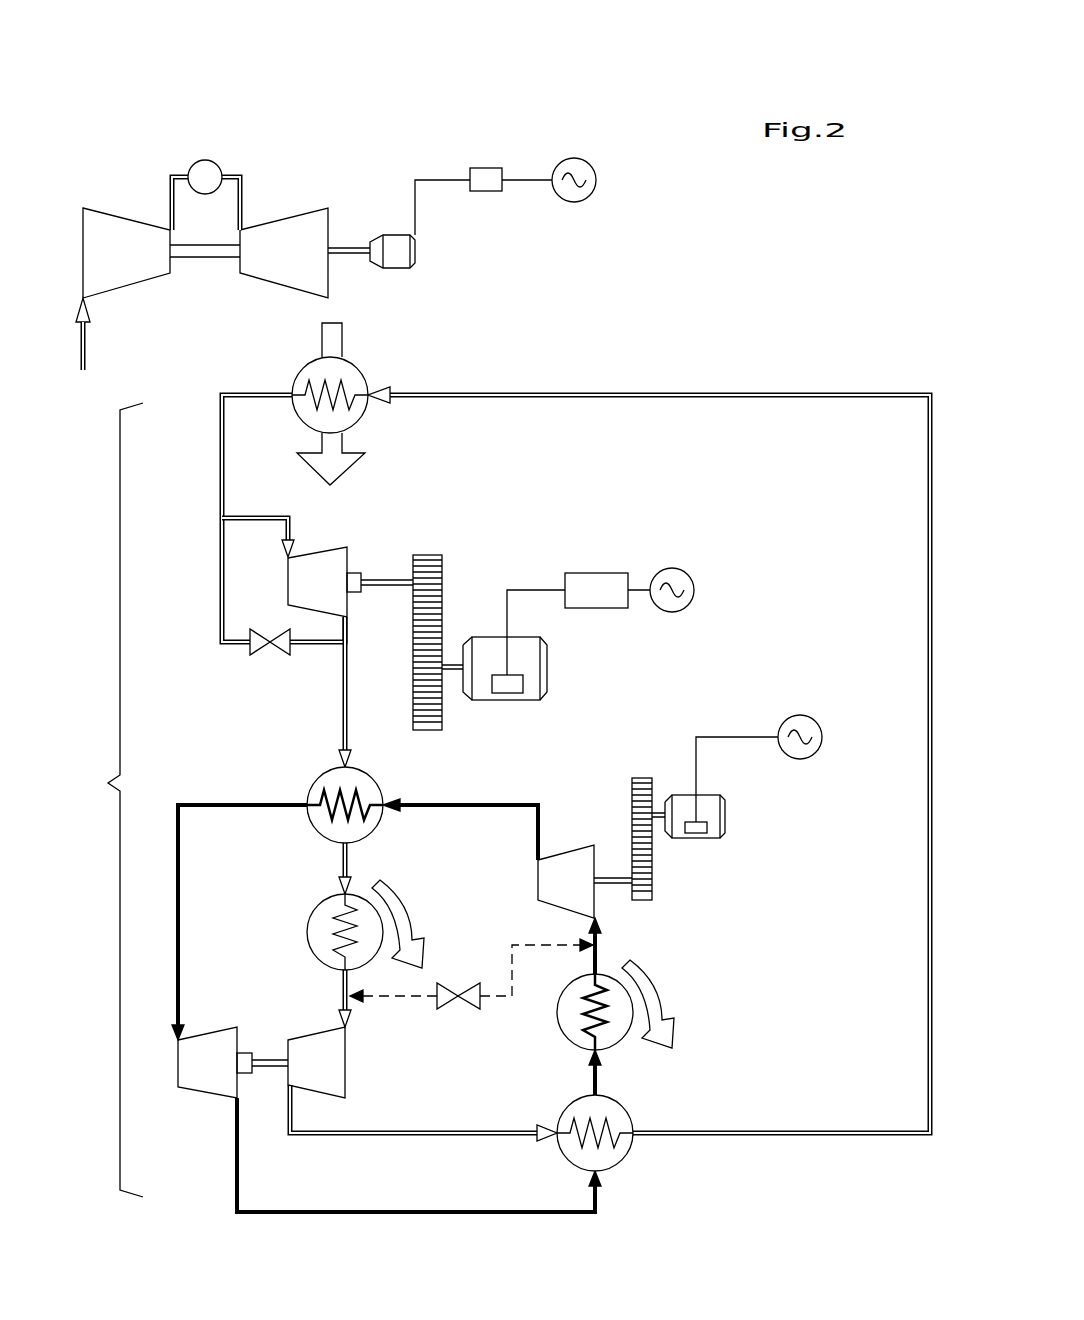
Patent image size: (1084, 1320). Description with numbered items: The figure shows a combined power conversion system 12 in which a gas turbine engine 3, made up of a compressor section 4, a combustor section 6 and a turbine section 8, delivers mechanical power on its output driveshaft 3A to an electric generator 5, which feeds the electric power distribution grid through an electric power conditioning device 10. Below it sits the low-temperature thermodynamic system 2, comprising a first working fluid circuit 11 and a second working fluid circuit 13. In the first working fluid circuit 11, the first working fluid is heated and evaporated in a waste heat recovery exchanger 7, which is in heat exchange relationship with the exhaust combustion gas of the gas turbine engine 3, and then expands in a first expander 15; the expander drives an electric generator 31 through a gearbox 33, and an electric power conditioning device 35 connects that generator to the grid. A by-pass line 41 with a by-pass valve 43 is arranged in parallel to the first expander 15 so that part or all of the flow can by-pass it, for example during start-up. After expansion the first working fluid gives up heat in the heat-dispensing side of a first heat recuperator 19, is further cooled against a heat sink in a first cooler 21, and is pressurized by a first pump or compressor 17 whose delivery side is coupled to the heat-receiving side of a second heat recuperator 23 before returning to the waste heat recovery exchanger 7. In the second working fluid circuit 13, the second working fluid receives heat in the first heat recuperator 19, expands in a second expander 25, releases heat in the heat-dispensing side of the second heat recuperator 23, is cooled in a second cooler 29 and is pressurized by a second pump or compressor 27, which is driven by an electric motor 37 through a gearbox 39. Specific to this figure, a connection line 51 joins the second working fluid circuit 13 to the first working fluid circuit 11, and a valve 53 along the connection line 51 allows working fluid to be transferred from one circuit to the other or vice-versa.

The bottom, low-temperature thermodynamic system 2 is at (109, 800).
The gas turbine engine 3 is at (245, 216).
The output driveshaft 3A is at (352, 258).
The compressor section 4 is at (120, 235).
The electric generator 5 is at (393, 240).
The combustor section 6 is at (208, 168).
The waste heat recovery exchanger 7 is at (315, 380).
The turbine section 8 is at (285, 235).
The electric power conditioning device 10 is at (487, 150).
The first working fluid circuit 11 is at (710, 363).
The combined power conversion system 12 is at (503, 131).
The second working fluid circuit 13 is at (172, 802).
The first expander 15 is at (322, 560).
The first pump or compressor 17 is at (313, 1048).
The first heat recuperator 19 is at (327, 786).
The first cooler 21 is at (337, 932).
The second heat recuperator 23 is at (588, 1115).
The second expander 25 is at (205, 1050).
The second pump or compressor 27 is at (558, 872).
The second cooler 29 is at (612, 1040).
The electric generator 31 is at (533, 683).
The gearbox 33 is at (448, 553).
The electric power conditioning device 35 is at (592, 585).
The electric motor 37 is at (713, 824).
The gearbox 39 is at (650, 773).
The by-pass line 41 is at (222, 567).
The by-pass valve 43 is at (282, 652).
The connection line 51 is at (408, 1002).
The valve 53 is at (448, 1002).